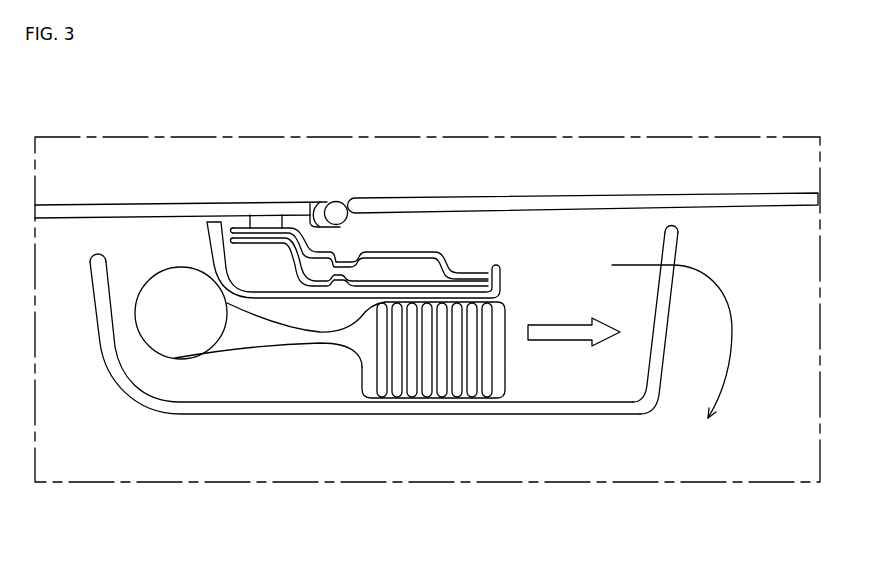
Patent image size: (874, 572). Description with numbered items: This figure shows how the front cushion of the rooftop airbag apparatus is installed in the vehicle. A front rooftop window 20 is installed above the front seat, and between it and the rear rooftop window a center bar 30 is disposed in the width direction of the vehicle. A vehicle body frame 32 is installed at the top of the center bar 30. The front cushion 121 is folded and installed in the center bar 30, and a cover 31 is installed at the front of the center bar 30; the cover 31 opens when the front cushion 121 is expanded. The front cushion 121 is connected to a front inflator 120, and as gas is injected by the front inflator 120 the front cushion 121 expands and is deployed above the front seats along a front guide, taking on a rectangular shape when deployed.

The front rooftop window 20 is at (525, 203).
The center bar 30 is at (328, 405).
The cover 31 is at (667, 307).
The vehicle body frame 32 is at (293, 297).
The front inflator 120 is at (150, 350).
The front cushion 121 is at (472, 352).